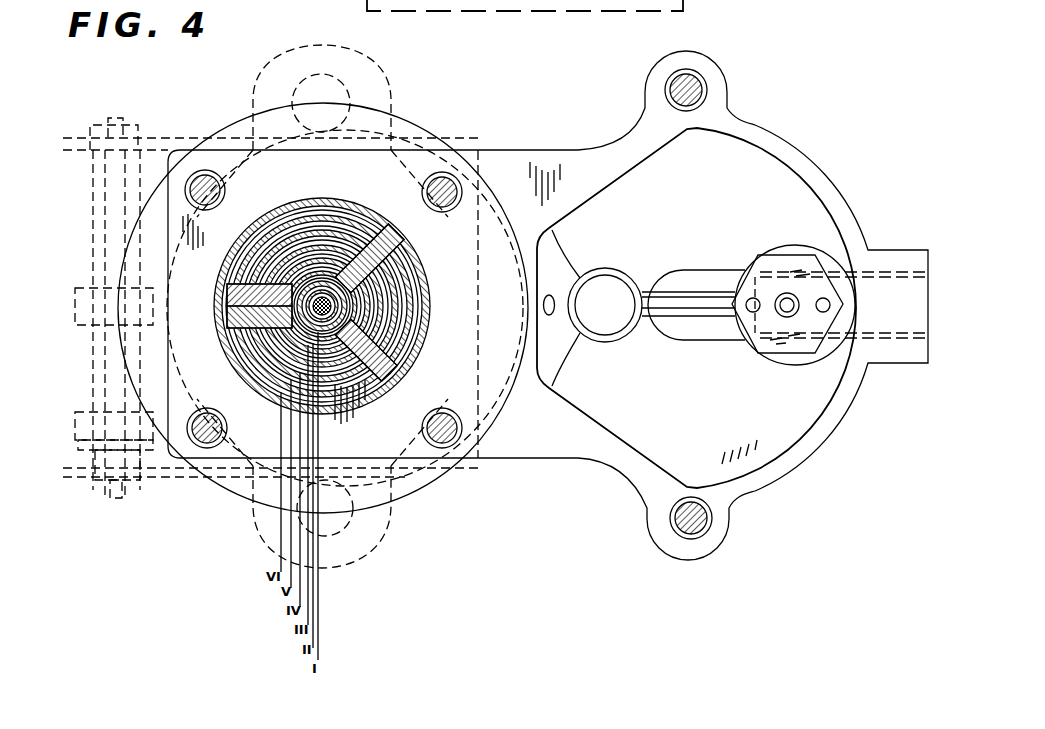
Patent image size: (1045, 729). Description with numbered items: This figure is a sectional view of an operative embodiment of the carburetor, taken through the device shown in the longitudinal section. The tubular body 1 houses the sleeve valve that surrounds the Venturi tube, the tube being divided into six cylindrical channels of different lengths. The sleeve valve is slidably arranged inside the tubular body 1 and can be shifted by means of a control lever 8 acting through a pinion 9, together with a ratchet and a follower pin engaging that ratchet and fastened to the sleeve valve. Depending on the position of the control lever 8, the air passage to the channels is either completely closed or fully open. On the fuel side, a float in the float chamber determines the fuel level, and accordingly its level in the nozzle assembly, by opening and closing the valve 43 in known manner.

The tubular body 1 is at (246, 380).
The control lever 8 is at (88, 414).
The pinion 9 is at (84, 327).
The valve 43 is at (803, 343).